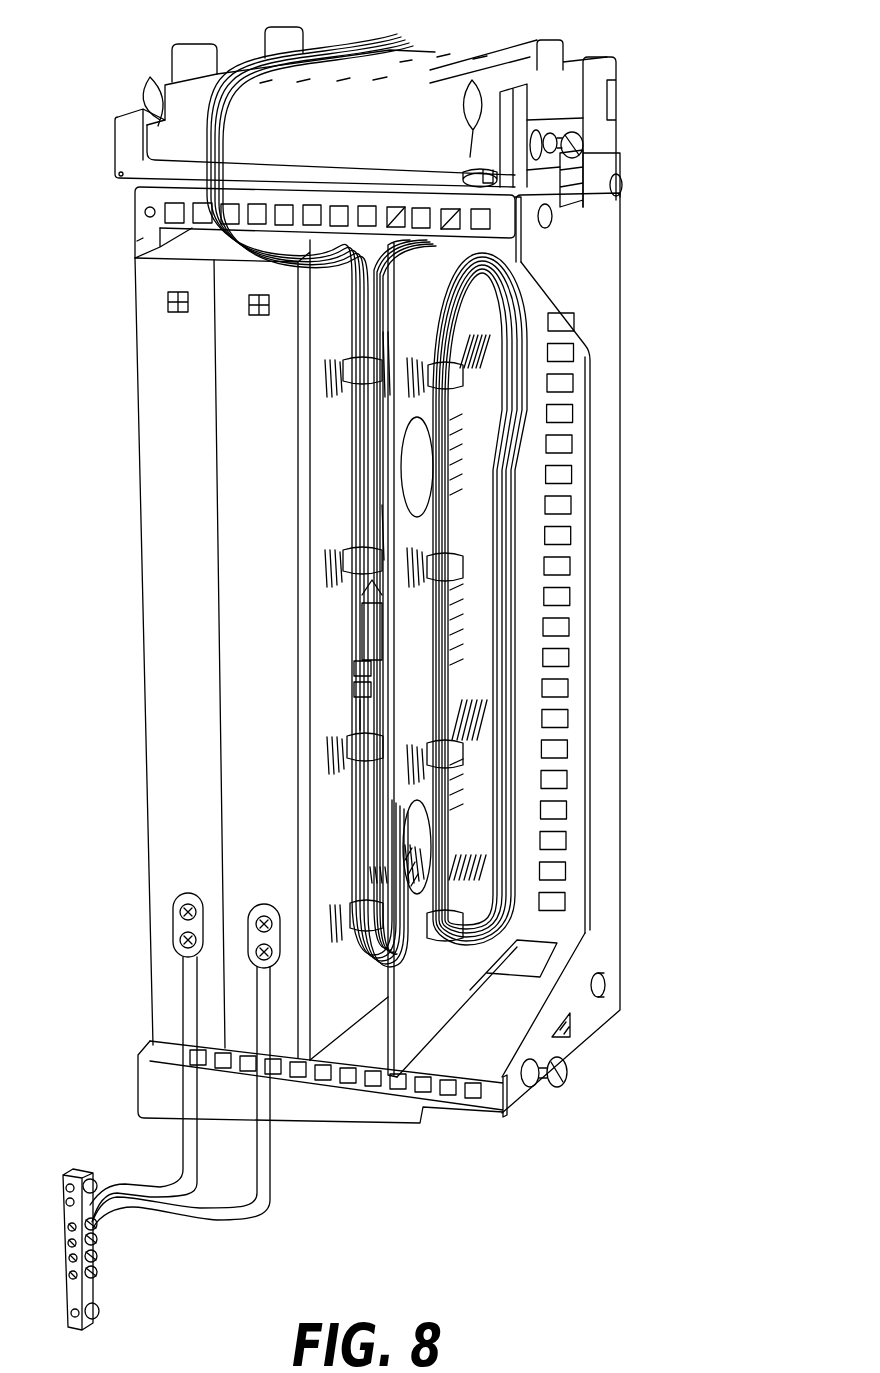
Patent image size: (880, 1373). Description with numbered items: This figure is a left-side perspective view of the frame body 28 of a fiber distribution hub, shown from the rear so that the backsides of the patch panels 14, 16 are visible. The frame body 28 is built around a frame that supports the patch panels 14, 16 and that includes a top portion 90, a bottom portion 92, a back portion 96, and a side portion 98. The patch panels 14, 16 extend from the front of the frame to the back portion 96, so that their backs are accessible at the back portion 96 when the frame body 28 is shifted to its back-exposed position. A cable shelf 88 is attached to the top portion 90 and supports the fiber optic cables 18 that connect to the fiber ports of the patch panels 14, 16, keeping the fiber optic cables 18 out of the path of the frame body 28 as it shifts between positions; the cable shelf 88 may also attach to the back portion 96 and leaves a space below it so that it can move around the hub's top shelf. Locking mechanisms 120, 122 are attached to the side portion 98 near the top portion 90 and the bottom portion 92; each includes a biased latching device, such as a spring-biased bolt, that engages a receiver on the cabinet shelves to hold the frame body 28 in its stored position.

The patch panel 14 is at (278, 1052).
The patch panel 16 is at (158, 994).
The fiber optic cables 18 is at (505, 537).
The frame body 28 is at (646, 368).
The cable shelf 88 is at (423, 60).
The top portion 90 is at (131, 189).
The bottom portion 92 is at (472, 1107).
The back portion 96 is at (134, 242).
The side portion 98 is at (595, 272).
The locking mechanism 120 is at (584, 145).
The locking mechanism 122 is at (570, 1078).